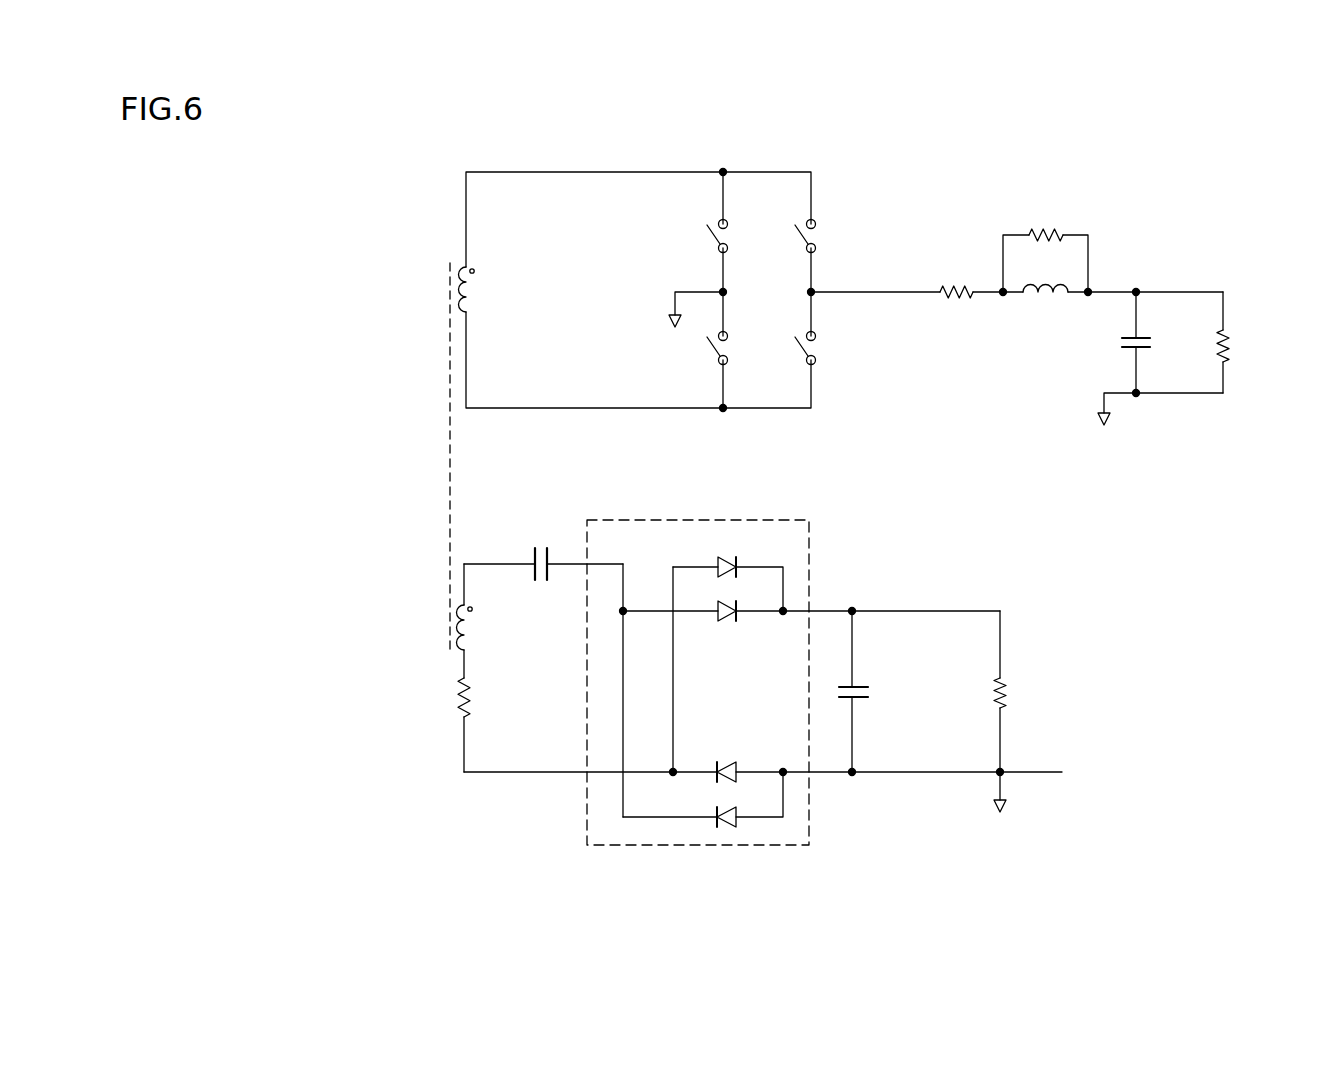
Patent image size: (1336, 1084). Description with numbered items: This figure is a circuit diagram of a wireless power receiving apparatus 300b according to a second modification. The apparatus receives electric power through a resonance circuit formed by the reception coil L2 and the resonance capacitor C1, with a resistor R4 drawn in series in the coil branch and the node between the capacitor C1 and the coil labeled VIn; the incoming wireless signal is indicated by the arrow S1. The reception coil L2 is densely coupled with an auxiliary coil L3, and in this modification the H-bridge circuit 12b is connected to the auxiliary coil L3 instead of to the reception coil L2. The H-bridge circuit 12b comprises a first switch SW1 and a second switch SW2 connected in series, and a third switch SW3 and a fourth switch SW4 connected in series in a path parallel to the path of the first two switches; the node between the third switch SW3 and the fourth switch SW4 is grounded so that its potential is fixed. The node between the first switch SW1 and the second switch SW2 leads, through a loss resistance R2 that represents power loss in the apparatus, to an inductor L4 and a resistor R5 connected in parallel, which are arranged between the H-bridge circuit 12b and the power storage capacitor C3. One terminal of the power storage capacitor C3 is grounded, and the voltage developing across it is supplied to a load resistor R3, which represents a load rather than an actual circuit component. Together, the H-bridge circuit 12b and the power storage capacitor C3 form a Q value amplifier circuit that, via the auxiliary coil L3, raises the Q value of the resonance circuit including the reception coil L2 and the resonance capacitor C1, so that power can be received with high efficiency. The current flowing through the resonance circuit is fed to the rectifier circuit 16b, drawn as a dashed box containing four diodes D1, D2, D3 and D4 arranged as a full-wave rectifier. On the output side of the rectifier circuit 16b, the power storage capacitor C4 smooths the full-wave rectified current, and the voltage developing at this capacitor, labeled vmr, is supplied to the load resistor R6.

The H-bridge circuit 12b is at (852, 160).
The rectifier circuit 16b is at (708, 520).
The wireless power receiving apparatus 300b is at (848, 890).
The signal S1 is at (391, 642).
The first switch SW1 is at (818, 233).
The second switch SW2 is at (818, 343).
The third switch SW3 is at (733, 233).
The fourth switch SW4 is at (733, 352).
The reception coil L2 is at (476, 631).
The auxiliary coil L3 is at (476, 291).
The inductor L4 is at (1045, 300).
The loss resistance R2 is at (956, 287).
The load resistor R3 is at (1230, 348).
The resistor R4 is at (458, 706).
The resistor R5 is at (1047, 231).
The load resistor R6 is at (1008, 698).
The resonance capacitor C1 is at (538, 545).
The power storage capacitor C3 is at (1155, 345).
The power storage capacitor C4 is at (874, 691).
The diode D1 is at (732, 752).
The diode D2 is at (732, 797).
The diode D3 is at (732, 592).
The diode D4 is at (732, 548).
The input voltage node VIn is at (476, 551).
The rectified voltage node vmr is at (1005, 598).